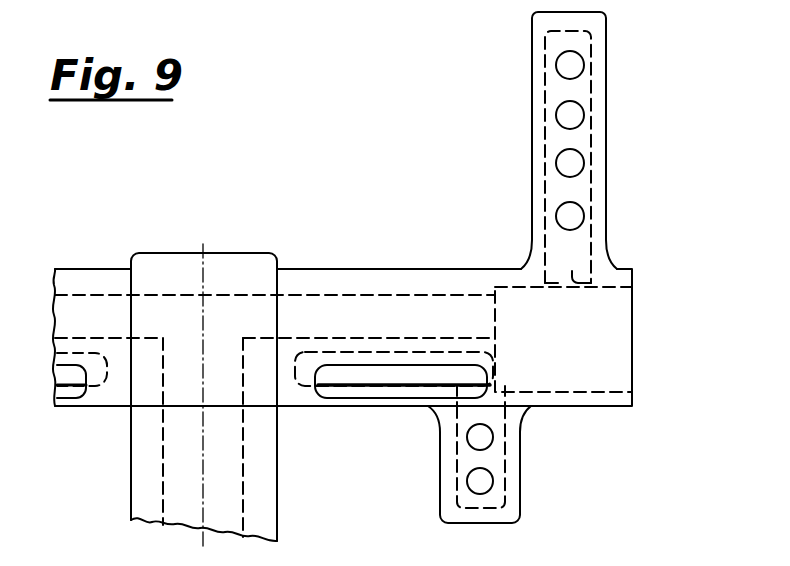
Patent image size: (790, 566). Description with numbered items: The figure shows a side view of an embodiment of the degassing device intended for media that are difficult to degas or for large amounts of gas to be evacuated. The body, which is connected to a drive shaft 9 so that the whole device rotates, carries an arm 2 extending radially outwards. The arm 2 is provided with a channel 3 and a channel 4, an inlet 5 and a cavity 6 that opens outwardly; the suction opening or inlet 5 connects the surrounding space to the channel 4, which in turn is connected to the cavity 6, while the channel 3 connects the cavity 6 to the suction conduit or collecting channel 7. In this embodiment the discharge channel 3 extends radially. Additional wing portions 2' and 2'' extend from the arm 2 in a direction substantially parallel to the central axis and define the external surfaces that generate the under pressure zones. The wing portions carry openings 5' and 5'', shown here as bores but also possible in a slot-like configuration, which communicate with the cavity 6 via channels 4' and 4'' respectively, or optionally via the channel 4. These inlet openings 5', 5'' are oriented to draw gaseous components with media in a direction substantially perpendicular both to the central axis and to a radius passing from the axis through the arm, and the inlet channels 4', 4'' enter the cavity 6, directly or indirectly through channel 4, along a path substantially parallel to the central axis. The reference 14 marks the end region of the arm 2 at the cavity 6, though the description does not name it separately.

The arm 2 is at (342, 309).
The channel 3 is at (325, 322).
The channel 4 is at (400, 406).
The inlet 5 is at (273, 411).
The cavity 6 is at (610, 353).
The collecting channel 7 is at (173, 477).
The drive shaft 9 is at (265, 503).
The end face of bar 14 is at (634, 303).
The wing portion 2' is at (542, 140).
The channel 4' is at (611, 157).
The opening 5' is at (617, 140).
The wing portion 2'' is at (505, 470).
The channel 4'' is at (451, 483).
The opening 5'' is at (525, 459).